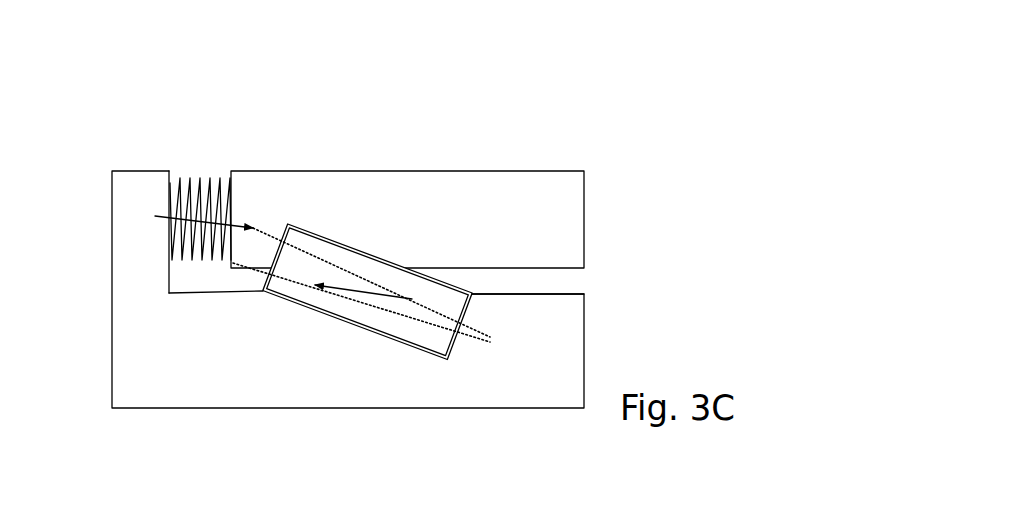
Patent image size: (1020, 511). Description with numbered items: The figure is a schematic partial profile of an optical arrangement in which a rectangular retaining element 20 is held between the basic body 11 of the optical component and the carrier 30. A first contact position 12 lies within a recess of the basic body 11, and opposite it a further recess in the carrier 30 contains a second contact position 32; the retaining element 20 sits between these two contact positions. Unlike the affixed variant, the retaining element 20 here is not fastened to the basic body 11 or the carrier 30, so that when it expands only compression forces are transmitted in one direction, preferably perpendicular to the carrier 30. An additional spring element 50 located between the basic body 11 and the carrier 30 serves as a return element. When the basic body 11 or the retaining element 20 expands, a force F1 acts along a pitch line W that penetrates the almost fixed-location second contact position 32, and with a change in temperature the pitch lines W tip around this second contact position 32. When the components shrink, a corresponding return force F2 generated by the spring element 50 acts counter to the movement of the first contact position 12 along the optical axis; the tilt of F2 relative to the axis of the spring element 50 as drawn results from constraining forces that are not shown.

The basic body 11 is at (547, 225).
The first contact position 12 is at (273, 243).
The retaining element 20 is at (427, 292).
The carrier 30 is at (160, 358).
The second contact position 32 is at (463, 330).
The spring element 50 is at (202, 193).
The pitch line W is at (283, 276).
The force F1 is at (360, 291).
The return force F2 is at (162, 213).